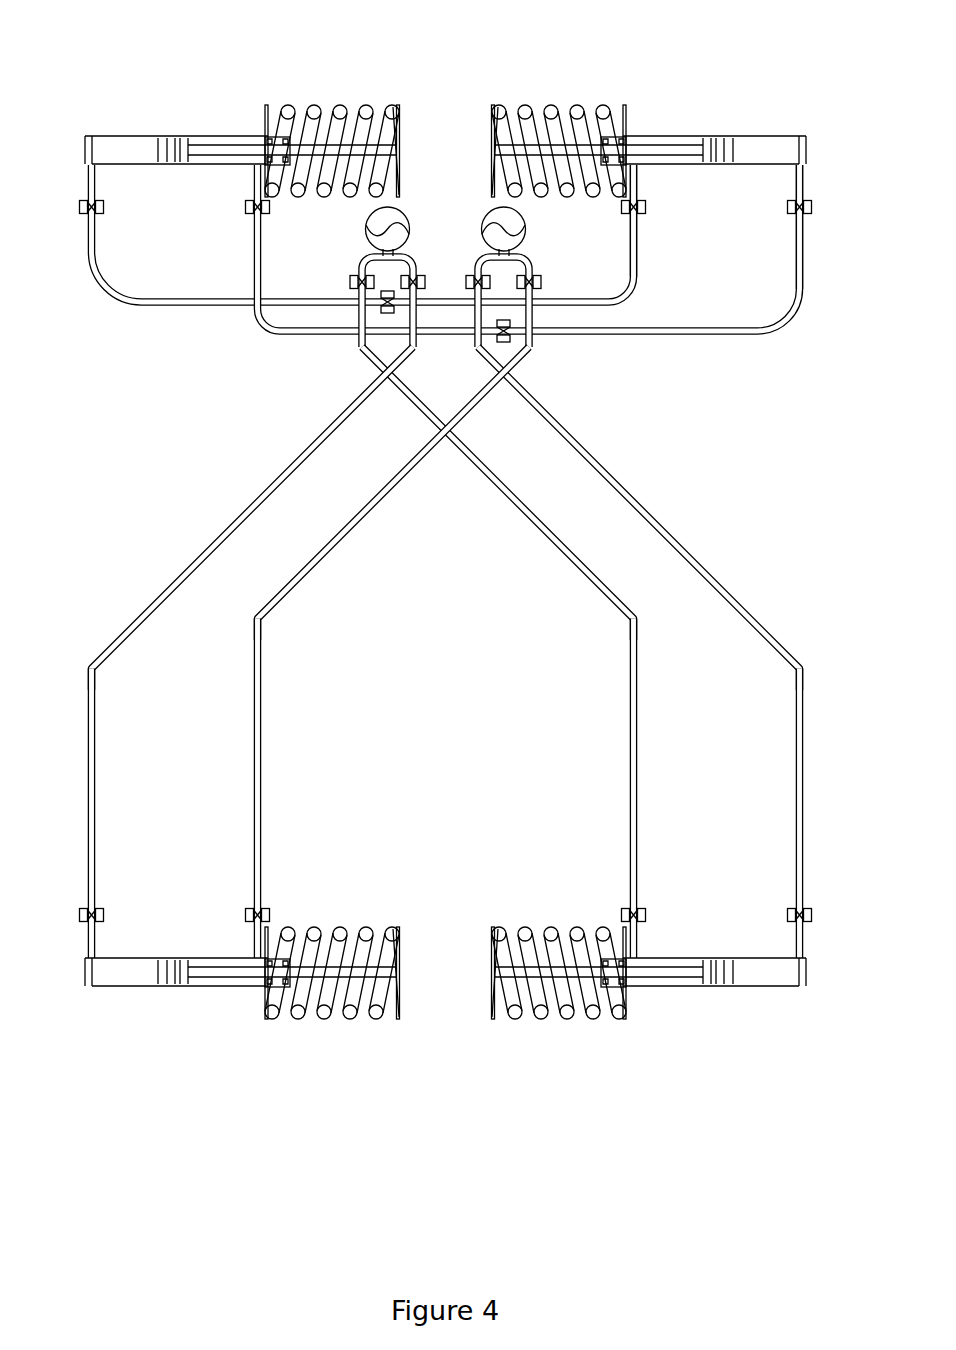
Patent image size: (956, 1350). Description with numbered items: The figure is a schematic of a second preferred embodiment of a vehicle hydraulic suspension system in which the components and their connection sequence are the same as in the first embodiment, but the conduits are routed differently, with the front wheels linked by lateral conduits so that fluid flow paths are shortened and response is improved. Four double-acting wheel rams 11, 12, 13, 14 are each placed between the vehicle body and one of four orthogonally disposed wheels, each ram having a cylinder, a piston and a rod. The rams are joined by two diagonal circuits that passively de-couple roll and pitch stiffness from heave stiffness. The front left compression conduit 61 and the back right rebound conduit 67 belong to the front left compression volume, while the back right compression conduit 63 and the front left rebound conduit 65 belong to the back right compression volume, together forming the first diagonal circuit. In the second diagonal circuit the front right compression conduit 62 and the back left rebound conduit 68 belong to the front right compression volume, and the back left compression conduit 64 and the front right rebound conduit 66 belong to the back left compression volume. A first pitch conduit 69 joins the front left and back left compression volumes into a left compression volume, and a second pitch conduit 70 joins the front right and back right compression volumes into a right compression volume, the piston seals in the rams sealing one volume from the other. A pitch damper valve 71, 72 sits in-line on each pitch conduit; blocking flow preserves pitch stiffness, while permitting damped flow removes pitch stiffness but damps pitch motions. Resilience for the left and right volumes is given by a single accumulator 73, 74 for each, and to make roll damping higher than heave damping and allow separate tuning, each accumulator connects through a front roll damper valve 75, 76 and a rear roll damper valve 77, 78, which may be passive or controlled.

The wheel ram 11 is at (167, 92).
The wheel ram 12 is at (724, 92).
The wheel ram 13 is at (705, 1040).
The wheel ram 14 is at (170, 1040).
The front left compression conduit 61 is at (95, 242).
The front right compression conduit 62 is at (797, 242).
The back right compression conduit 63 is at (796, 830).
The back left compression conduit 64 is at (97, 830).
The front left rebound conduit 65 is at (253, 242).
The front right rebound conduit 66 is at (636, 242).
The back right rebound conduit 67 is at (637, 830).
The back left rebound conduit 68 is at (254, 830).
The first pitch conduit 69 is at (372, 312).
The second pitch conduit 70 is at (525, 347).
The pitch damper valve 71 is at (391, 318).
The pitch damper valve 72 is at (497, 342).
The accumulator 73 is at (395, 217).
The accumulator 74 is at (495, 217).
The front roll damper valve 75 is at (353, 278).
The front roll damper valve 76 is at (537, 278).
The rear roll damper valve 77 is at (473, 277).
The rear roll damper valve 78 is at (417, 277).